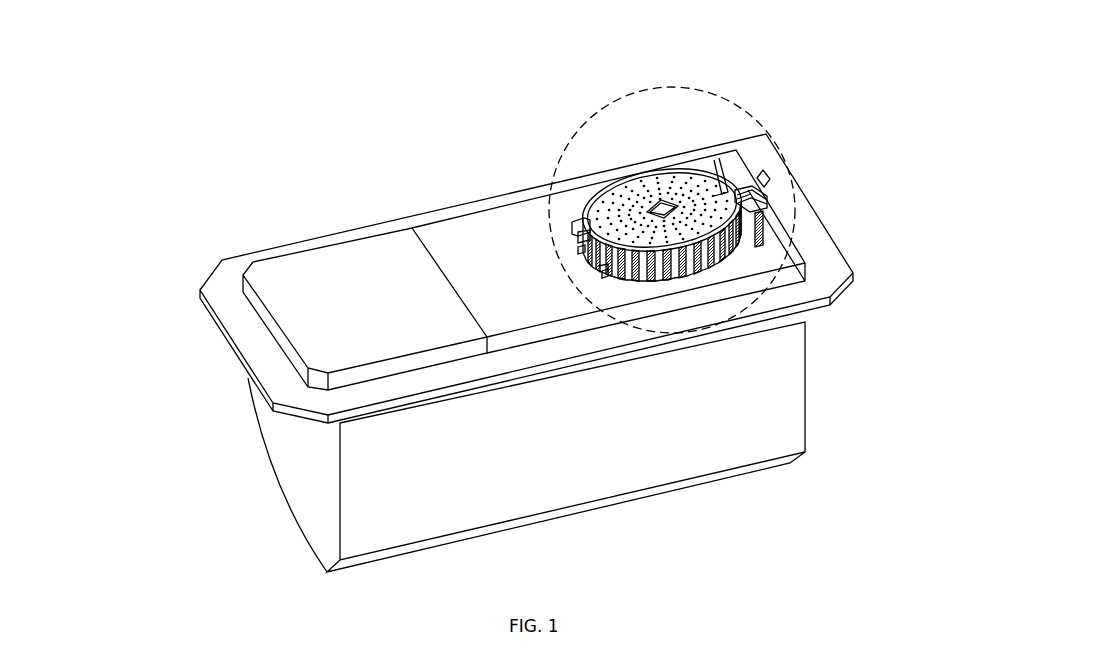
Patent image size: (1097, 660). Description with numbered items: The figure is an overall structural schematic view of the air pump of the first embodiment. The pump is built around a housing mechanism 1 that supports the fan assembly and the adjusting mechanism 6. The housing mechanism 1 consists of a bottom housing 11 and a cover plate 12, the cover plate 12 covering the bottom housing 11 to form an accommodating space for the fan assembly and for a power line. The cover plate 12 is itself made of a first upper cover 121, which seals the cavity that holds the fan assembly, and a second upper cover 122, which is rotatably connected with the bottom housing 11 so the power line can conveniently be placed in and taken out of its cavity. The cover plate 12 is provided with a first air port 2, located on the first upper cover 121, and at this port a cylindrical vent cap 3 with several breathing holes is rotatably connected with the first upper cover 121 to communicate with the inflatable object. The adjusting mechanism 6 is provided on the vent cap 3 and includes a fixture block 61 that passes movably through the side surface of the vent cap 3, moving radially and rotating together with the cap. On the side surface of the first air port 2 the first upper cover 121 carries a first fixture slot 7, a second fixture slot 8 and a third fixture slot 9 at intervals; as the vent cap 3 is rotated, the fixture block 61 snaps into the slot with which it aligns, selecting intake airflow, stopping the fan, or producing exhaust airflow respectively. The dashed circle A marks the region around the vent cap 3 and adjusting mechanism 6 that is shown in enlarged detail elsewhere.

The housing mechanism 1 is at (272, 142).
The bottom housing 11 is at (455, 447).
The cover plate 12 is at (306, 122).
The first upper cover 121 is at (497, 230).
The second upper cover 122 is at (405, 253).
The first air port 2 is at (712, 242).
The vent cap 3 is at (697, 190).
The adjusting mechanism 6 is at (766, 179).
The fixture block 61 is at (584, 235).
The first fixture slot 7 is at (574, 225).
The second fixture slot 8 is at (584, 235).
The third fixture slot 9 is at (607, 272).
The detail region A is at (739, 102).